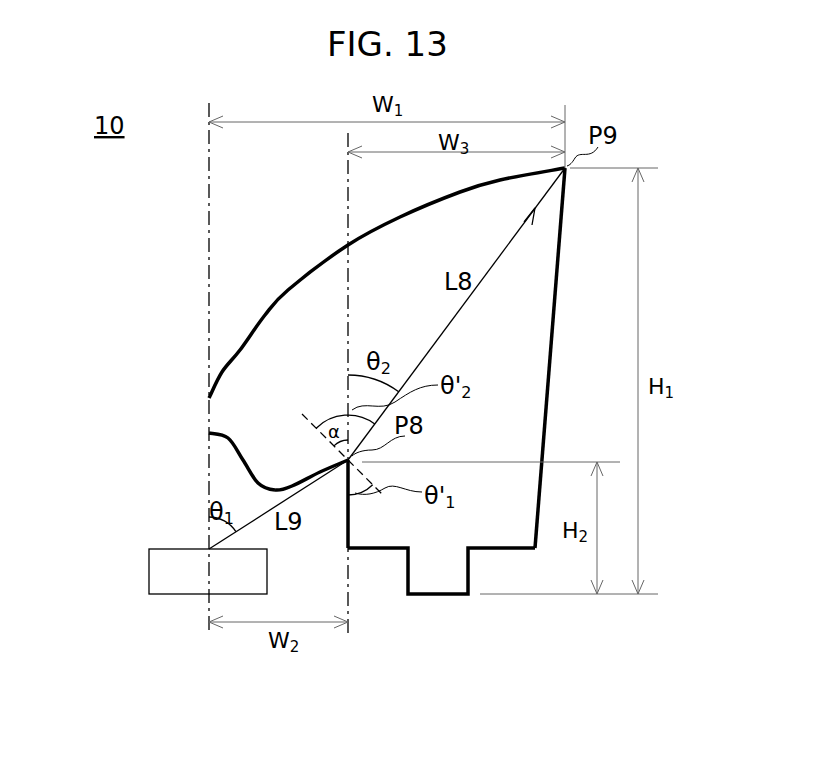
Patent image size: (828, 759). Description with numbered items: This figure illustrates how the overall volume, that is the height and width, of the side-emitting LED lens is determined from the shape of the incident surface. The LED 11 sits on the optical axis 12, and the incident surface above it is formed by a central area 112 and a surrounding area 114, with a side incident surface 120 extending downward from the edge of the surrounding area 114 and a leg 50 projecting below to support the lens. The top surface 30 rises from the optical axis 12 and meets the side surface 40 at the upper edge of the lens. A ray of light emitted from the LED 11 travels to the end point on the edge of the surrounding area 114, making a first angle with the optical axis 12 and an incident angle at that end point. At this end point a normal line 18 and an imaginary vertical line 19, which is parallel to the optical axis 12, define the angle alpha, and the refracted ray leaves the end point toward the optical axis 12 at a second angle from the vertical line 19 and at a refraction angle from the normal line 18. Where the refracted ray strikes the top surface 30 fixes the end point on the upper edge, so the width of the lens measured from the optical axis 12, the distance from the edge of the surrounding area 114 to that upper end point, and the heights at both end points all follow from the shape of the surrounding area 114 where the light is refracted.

The LED 11 is at (172, 587).
The optical axis 12 is at (209, 194).
The normal line 18 is at (315, 423).
The imaginary vertical line 19 is at (348, 342).
The top surface 30 is at (318, 265).
The side surface 40 is at (550, 380).
The leg 50 is at (448, 587).
The central area 112 is at (240, 463).
The surrounding area 114 is at (287, 487).
The side incident surface 120 is at (350, 512).